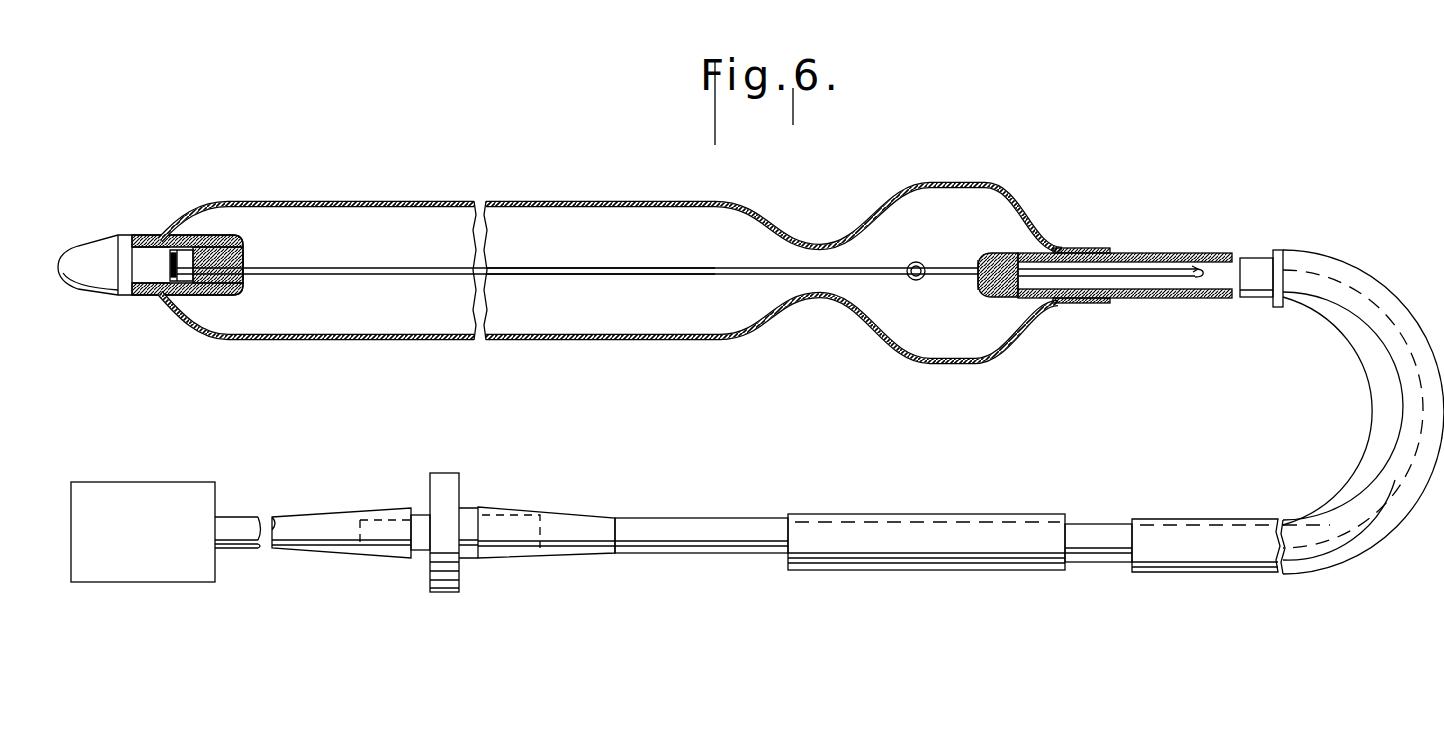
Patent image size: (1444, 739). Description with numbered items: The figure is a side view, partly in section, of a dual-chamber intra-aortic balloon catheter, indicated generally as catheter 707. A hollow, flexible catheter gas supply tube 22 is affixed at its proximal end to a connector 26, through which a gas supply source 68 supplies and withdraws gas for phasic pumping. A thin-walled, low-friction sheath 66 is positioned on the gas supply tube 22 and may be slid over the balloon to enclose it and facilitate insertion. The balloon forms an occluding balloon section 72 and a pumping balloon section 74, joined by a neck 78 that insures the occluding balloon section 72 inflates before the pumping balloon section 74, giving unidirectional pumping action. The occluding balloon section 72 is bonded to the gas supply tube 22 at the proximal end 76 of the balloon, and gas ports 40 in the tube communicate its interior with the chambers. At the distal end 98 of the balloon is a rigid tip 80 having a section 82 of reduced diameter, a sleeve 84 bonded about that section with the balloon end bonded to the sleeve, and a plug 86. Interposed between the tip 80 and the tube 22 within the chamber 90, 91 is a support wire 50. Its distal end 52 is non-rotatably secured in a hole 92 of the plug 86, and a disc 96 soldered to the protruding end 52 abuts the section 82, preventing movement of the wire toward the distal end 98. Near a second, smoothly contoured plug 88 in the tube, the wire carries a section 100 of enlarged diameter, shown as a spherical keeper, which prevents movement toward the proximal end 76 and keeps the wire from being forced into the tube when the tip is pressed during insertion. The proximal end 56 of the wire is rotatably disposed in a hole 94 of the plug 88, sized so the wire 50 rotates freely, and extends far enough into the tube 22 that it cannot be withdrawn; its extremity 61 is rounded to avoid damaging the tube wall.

The rigid tip 80 is at (103, 232).
The section of reduced diameter 82 is at (151, 300).
The sleeve 84 is at (197, 288).
The end of the support wire 52 is at (187, 272).
The disc 96 is at (174, 251).
The plug 86 is at (244, 262).
The hole 92 is at (255, 272).
The distal end of the balloon 98 is at (205, 206).
The pumping balloon section 74 is at (533, 204).
The support wire 50 is at (553, 266).
The chamber 90 is at (714, 257).
The neck 78 is at (822, 244).
The catheter assembly 707 is at (878, 160).
The occluding balloon section 72 is at (980, 184).
The chamber 91 is at (972, 227).
The section of enlarged diameter 100 is at (916, 262).
The plug 88 is at (979, 258).
The hole 94 is at (977, 277).
The gas ports 40 is at (1034, 301).
The end of the balloon 76 is at (1100, 250).
The end of the support wire 56 is at (1143, 290).
The extremity 61 is at (1200, 292).
The catheter gas supply tube 22 is at (1215, 258).
The gas supply source 68 is at (186, 487).
The connector 26 is at (459, 475).
The sheath 66 is at (982, 571).